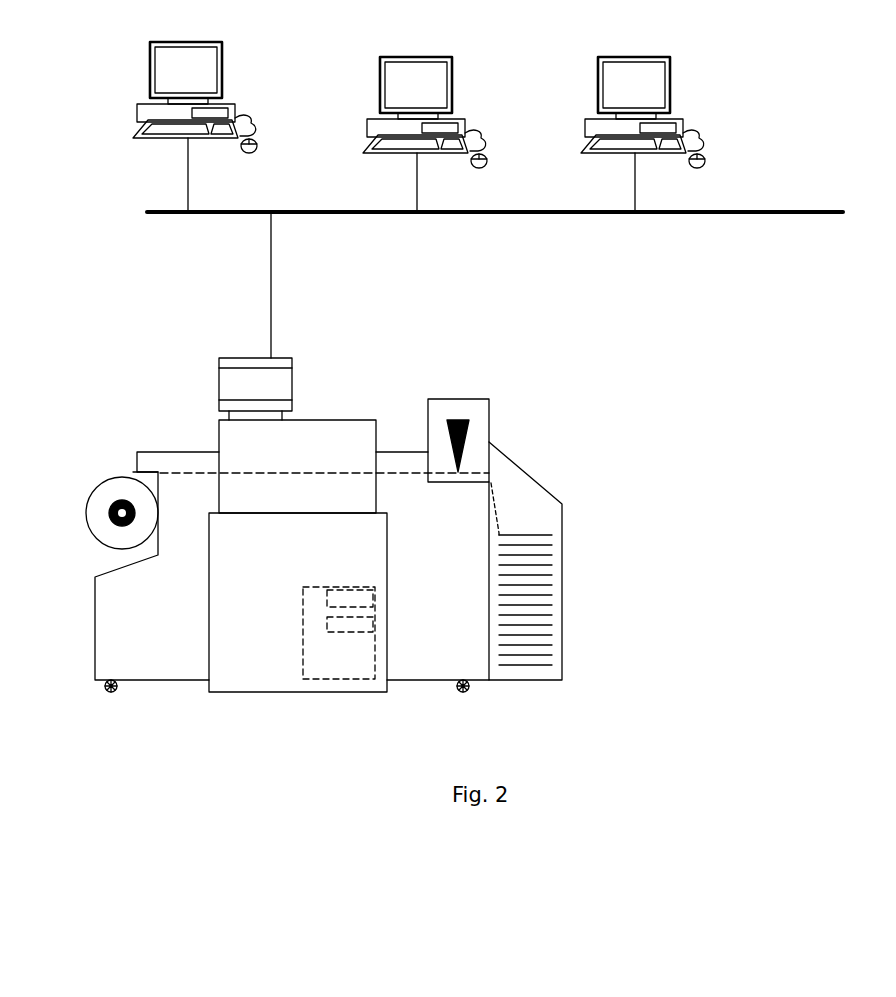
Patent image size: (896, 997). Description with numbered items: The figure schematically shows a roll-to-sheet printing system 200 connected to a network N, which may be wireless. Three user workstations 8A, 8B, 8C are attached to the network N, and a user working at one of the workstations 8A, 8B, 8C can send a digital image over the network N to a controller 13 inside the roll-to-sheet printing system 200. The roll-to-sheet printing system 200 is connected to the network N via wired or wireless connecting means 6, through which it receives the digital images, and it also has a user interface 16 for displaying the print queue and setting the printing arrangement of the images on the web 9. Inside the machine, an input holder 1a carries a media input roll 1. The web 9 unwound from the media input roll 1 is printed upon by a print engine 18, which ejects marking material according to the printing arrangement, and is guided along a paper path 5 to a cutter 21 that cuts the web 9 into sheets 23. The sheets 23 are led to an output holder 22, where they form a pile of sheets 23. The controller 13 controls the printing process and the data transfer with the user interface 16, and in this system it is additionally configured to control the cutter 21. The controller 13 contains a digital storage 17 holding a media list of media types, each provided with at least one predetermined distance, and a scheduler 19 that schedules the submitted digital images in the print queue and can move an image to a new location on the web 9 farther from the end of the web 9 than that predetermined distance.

The media input roll 1 is at (97, 535).
The input holder 1a is at (107, 512).
The paper path 5 is at (316, 470).
The connecting means 6 is at (272, 322).
The workstation 8A is at (232, 108).
The workstation 8B is at (462, 123).
The workstation 8C is at (680, 123).
The web 9 is at (134, 472).
The controller 13 is at (303, 608).
The user interface 16 is at (293, 390).
The digital storage 17 is at (358, 590).
The print engine 18 is at (376, 432).
The scheduler 19 is at (372, 625).
The cutter 21 is at (489, 421).
The output holder 22 is at (562, 553).
The sheets 23 is at (520, 668).
The roll-to-sheet printing system 200 is at (762, 638).
The network N is at (838, 216).